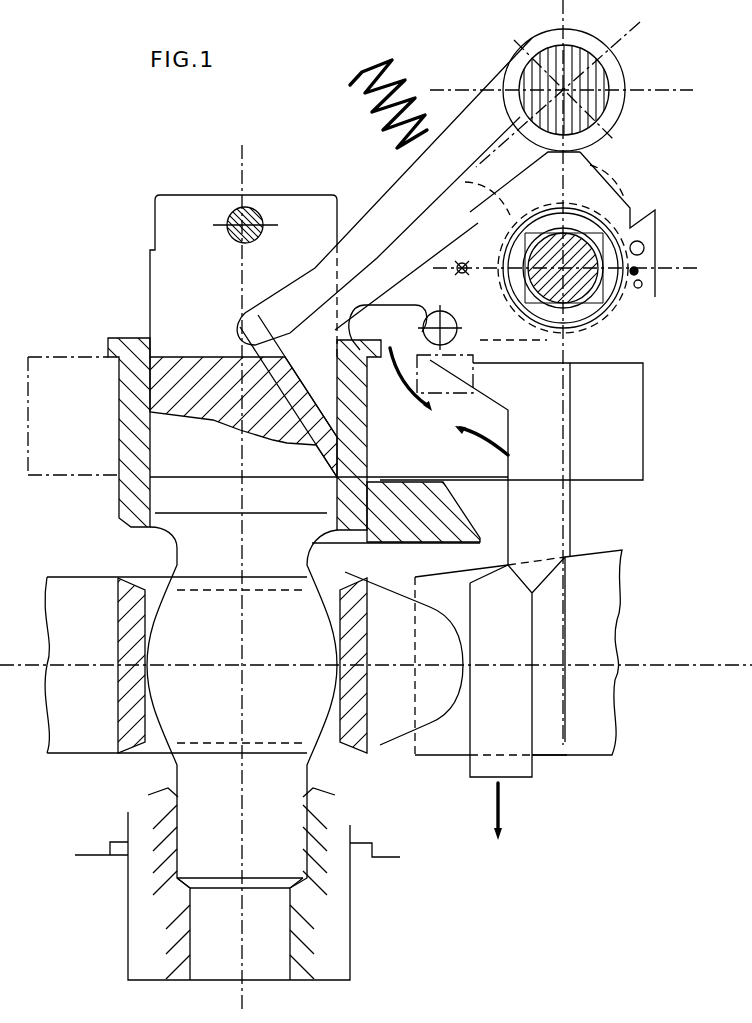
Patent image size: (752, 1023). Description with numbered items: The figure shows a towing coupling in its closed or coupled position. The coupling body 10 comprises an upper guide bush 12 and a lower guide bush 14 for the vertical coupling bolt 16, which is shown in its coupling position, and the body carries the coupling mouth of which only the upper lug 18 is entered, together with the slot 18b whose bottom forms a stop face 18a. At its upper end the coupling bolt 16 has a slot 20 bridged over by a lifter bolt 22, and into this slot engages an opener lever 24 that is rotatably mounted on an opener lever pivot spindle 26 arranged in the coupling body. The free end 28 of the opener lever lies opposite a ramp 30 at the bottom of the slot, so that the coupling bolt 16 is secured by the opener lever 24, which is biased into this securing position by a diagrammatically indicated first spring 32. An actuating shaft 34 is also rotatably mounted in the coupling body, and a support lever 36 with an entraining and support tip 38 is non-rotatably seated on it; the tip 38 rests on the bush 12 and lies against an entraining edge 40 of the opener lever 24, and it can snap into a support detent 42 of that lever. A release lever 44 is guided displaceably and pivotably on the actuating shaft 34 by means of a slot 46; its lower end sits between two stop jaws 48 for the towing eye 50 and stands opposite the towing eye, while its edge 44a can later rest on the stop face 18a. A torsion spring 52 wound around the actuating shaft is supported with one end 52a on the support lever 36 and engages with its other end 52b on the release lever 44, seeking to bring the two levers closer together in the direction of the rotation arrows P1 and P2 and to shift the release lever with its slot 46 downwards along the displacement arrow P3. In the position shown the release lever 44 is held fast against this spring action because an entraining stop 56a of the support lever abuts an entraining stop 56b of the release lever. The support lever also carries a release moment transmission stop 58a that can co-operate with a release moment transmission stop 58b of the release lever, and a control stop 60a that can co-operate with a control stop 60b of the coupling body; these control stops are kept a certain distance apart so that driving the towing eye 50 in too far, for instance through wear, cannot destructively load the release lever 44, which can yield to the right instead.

The coupling body 10 is at (60, 338).
The guide bush 12 is at (140, 342).
The guide bush 14 is at (340, 922).
The coupling bolt 16 is at (182, 553).
The upper lug 18 is at (390, 540).
The stop face 18a is at (418, 527).
The slot 18b is at (465, 525).
The slot 20 is at (163, 262).
The lifter bolt 22 is at (230, 210).
The opener lever 24 is at (465, 97).
The opener lever pivot spindle 26 is at (585, 52).
The free end 28 is at (255, 356).
The ramp 30 is at (300, 440).
The first spring 32 is at (350, 86).
The actuating shaft 34 is at (582, 295).
The support lever 36 is at (603, 365).
The entraining and support tip 38 is at (375, 316).
The entraining edge 40 is at (412, 268).
The support detent 42 is at (510, 217).
The release lever 44 is at (572, 515).
The edge 44a is at (508, 435).
The slot 46 is at (598, 186).
The stop jaws 48 is at (577, 747).
The towing eye 50 is at (378, 755).
The torsion spring 52 is at (550, 402).
The spring end 52a is at (462, 262).
The spring end 52b is at (643, 247).
The entraining stop 56a is at (641, 286).
The entraining stop 56b is at (641, 262).
The release moment transmission stop 58a is at (465, 181).
The release moment transmission stop 58b is at (600, 150).
The control stop 60a is at (450, 318).
The control stop 60b is at (452, 405).
The rotation arrow P1 is at (405, 370).
The rotation arrow P2 is at (488, 452).
The displacement arrow P3 is at (500, 808).